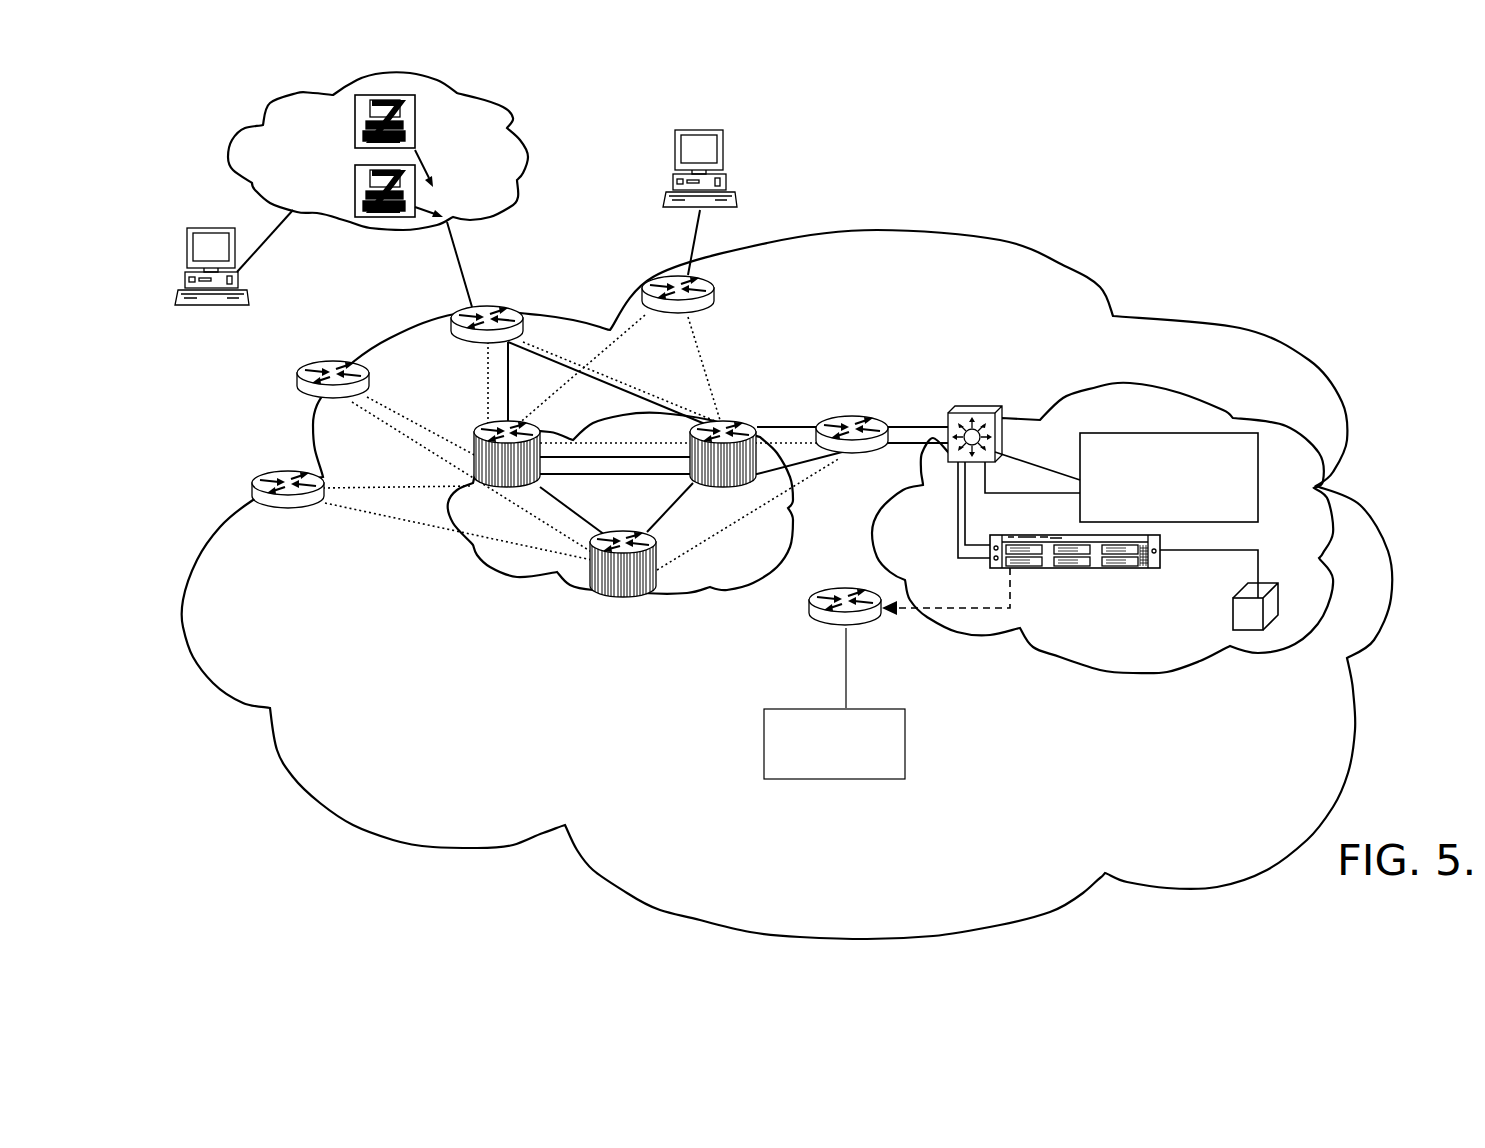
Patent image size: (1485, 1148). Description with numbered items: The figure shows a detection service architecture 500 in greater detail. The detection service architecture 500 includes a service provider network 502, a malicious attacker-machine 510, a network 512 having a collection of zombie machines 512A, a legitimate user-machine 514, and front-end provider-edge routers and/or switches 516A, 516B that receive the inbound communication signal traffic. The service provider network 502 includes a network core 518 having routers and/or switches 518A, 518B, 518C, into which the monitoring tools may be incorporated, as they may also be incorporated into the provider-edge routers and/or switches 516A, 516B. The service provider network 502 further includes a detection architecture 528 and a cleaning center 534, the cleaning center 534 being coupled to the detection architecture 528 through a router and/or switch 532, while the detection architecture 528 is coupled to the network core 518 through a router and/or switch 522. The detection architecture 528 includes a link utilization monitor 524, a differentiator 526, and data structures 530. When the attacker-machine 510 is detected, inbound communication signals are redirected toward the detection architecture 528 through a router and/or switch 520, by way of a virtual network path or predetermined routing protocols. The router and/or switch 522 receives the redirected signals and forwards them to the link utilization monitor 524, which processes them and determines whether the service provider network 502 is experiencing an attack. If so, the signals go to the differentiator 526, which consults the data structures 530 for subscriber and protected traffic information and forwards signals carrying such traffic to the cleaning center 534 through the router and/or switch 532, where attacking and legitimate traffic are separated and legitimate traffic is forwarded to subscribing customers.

The detection service architecture 500 is at (1246, 126).
The service provider network 502 is at (907, 228).
The malicious attacker-machine 510 is at (183, 235).
The network 512 is at (423, 73).
The zombie machines 512A is at (353, 115).
The legitimate user-machine 514 is at (725, 148).
The front-end provider-edge router and/or switch 516A is at (487, 306).
The front-end provider-edge router and/or switch 516B is at (714, 288).
The network core 518 is at (697, 593).
The router and/or switch 518A is at (593, 597).
The router and/or switch 518B is at (742, 420).
The router and/or switch 518C is at (478, 423).
The router and/or switch 520 is at (845, 415).
The router and/or switch 522 is at (975, 402).
The link utilization monitor 524 is at (1113, 433).
The differentiator 526 is at (1080, 570).
The detection architecture 528 is at (1122, 673).
The data structures 530 is at (1267, 632).
The router and/or switch 532 is at (868, 627).
The cleaning center 534 is at (764, 737).